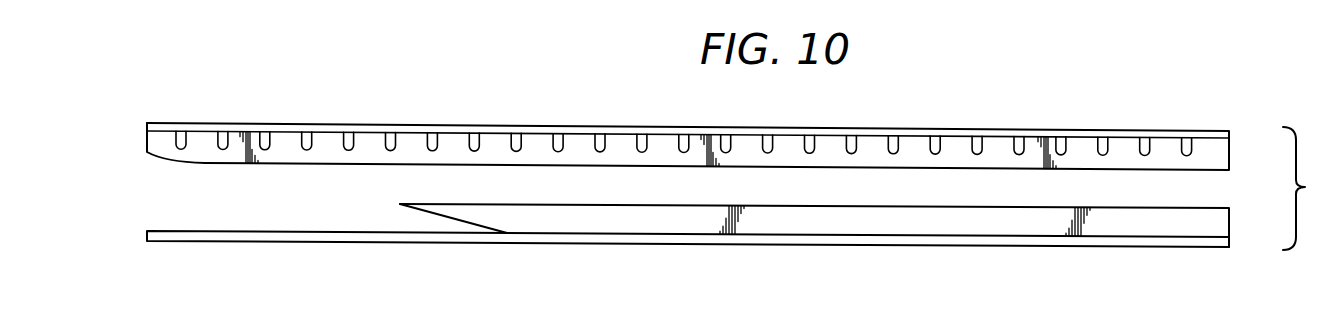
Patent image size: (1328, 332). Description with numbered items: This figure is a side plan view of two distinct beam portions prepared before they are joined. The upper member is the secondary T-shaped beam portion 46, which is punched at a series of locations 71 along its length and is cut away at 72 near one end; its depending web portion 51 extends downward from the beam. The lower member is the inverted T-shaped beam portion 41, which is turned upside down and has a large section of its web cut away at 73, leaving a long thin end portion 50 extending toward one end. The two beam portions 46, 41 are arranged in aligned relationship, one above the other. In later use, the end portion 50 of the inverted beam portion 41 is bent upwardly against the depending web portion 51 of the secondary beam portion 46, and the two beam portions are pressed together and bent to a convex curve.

The secondary T-shaped beam portion 46 is at (925, 133).
The cutaway 72 is at (158, 154).
The depending web portion 51 is at (287, 164).
The punched location 71 is at (519, 145).
The inverted T-shaped beam portion 41 is at (737, 247).
The web cutaway 73 is at (445, 209).
The end portion 50 is at (347, 242).